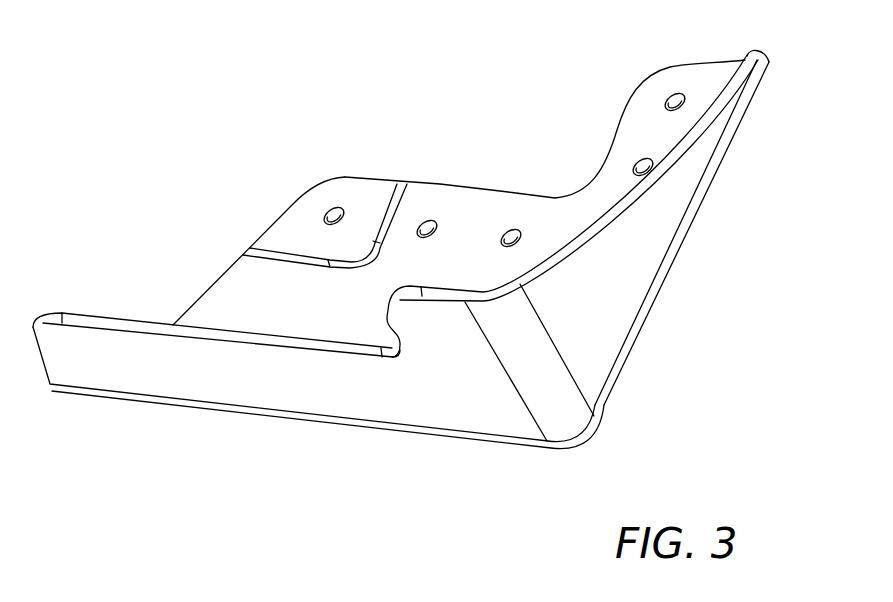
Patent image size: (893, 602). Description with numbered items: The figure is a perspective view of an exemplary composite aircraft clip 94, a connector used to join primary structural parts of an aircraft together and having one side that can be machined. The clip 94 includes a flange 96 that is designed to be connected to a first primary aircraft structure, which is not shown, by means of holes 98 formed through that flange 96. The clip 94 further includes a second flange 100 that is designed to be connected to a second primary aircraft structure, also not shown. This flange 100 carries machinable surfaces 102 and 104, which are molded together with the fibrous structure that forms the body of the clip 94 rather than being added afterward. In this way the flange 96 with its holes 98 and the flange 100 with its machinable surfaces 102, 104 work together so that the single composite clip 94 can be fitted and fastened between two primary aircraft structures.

The composite aircraft clip 94 is at (735, 260).
The flange 96 is at (465, 189).
The holes 98 is at (672, 95).
The flange 100 is at (115, 322).
The machinable surface 102 is at (187, 378).
The machinable surface 104 is at (217, 334).